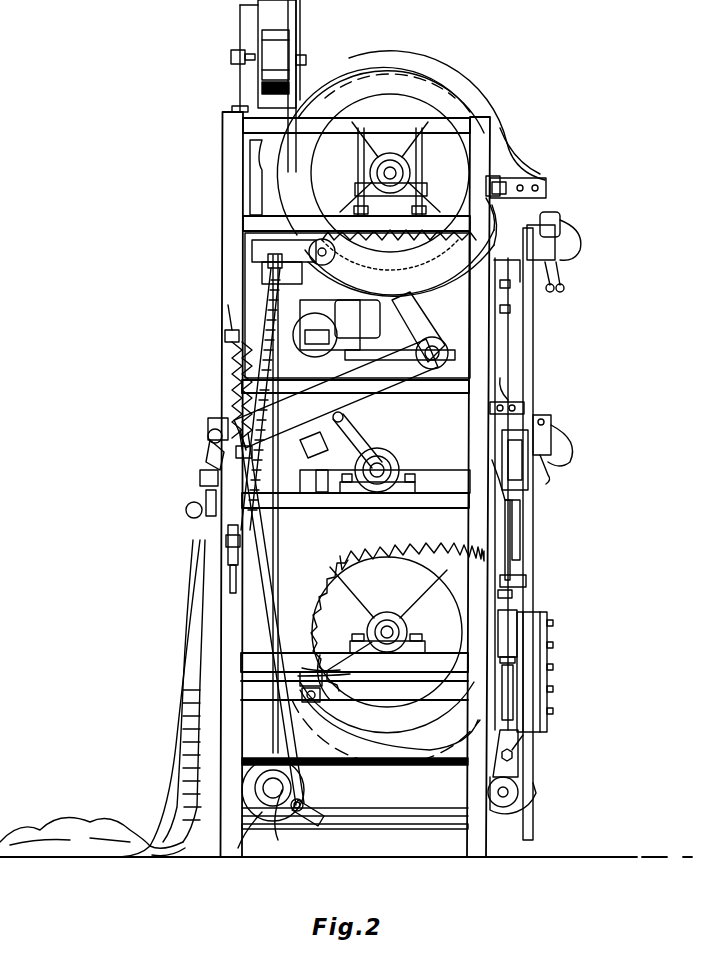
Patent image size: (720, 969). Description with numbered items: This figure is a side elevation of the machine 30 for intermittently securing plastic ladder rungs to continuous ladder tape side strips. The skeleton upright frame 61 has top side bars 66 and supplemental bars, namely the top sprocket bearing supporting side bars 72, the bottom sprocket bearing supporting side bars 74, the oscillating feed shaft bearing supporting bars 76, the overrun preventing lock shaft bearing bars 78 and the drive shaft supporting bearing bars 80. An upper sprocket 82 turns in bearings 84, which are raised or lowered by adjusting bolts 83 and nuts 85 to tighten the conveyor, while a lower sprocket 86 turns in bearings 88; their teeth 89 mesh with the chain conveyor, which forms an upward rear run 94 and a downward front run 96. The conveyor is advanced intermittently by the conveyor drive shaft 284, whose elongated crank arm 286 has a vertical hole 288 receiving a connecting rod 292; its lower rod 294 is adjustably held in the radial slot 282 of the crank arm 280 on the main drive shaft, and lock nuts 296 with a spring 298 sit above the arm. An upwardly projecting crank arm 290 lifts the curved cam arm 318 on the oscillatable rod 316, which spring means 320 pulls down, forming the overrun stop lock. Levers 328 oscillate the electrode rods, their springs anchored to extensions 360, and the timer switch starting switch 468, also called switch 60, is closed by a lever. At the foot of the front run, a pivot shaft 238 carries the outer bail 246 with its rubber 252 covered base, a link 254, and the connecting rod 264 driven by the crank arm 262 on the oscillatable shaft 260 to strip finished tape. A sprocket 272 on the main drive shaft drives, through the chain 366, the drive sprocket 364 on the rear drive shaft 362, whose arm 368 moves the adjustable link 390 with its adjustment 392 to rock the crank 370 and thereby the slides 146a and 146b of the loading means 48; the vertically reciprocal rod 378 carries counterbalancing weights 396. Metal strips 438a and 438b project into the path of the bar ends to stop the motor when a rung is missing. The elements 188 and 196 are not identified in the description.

The machine 30 is at (213, 284).
The loading means 48 is at (560, 430).
The timer switch starting switch 60 is at (388, 700).
The frame 61 is at (230, 151).
The top side bars 66 is at (368, 130).
The top sprocket bearing supporting side bars 72 is at (447, 215).
The bottom sprocket bearing supporting side bars 74 is at (412, 712).
The oscillating feed shaft bearing supporting bars 76 is at (441, 501).
The overrun preventing lock oscillating shaft supporting bearing bars 78 is at (438, 385).
The drive shaft supporting bearing bars 80 is at (413, 806).
The upper sprocket 82 is at (398, 259).
The adjusting bolts 83 is at (397, 130).
The bearings 84 is at (415, 178).
The nuts 85 is at (358, 188).
The lower sprocket 86 is at (420, 553).
The bearings 88 is at (404, 637).
The teeth 89 is at (357, 549).
The upward rear run 94 is at (510, 346).
The downward front run 96 is at (272, 604).
The slide 146a is at (568, 268).
The slide 146b is at (560, 464).
The drive pulley 188 is at (270, 42).
The belt housing 196 is at (303, 41).
The pivot shaft 238 is at (212, 433).
The outer bail 246 is at (212, 460).
The rubber 252 is at (196, 506).
The link 254 is at (206, 480).
The oscillatable shaft 260 is at (382, 468).
The crank arm 262 is at (360, 449).
The connecting rod 264 is at (292, 447).
The sprocket 272 is at (212, 840).
The crank arm 280 is at (270, 832).
The radial slot 282 is at (355, 774).
The conveyor drive shaft 284 is at (434, 348).
The elongated crank arm 286 is at (381, 379).
The vertical hole 288 is at (210, 443).
The crank arm 290 is at (383, 323).
The connecting rod 292 is at (262, 572).
The rod 294 is at (300, 798).
The lock nuts 296 is at (228, 338).
The spring 298 is at (238, 376).
The oscillatable rod 316 is at (318, 250).
The cam arm 318 is at (372, 288).
The spring means 320 is at (432, 327).
The levers 328 is at (244, 404).
The extensions 360 is at (232, 586).
The rear drive shaft 362 is at (510, 790).
The drive sprocket 364 is at (543, 798).
The chain 366 is at (405, 828).
The arm 368 is at (518, 768).
The pivotally mounted crank 370 is at (268, 782).
The vertically reciprocal rod 378 is at (530, 546).
The link 390 is at (508, 567).
The adjustment 392 is at (522, 617).
The adjusting counterbalancing weights 396 is at (552, 700).
The metal strip 438a is at (530, 178).
The metal strip 438b is at (518, 400).
The timer switch starting switch 468 is at (320, 653).